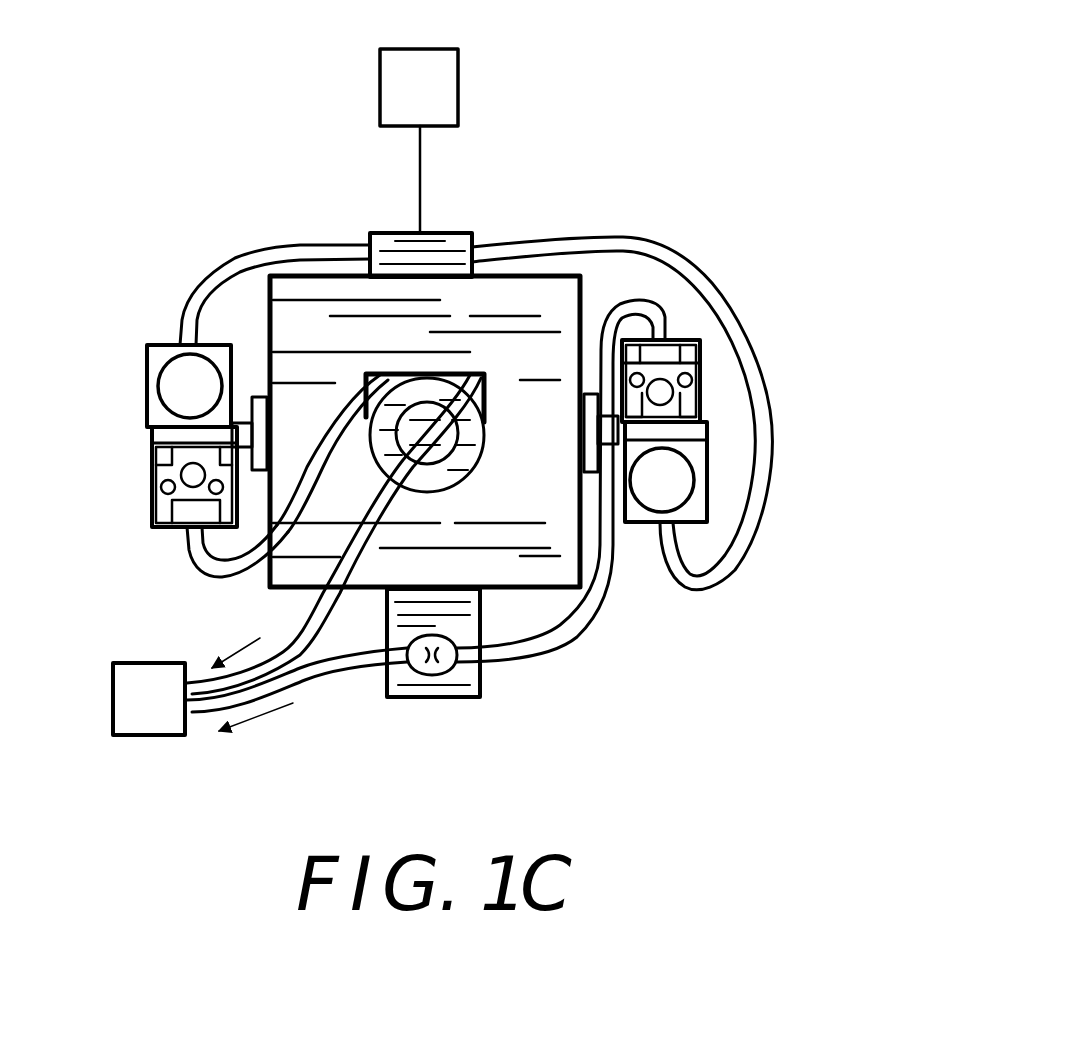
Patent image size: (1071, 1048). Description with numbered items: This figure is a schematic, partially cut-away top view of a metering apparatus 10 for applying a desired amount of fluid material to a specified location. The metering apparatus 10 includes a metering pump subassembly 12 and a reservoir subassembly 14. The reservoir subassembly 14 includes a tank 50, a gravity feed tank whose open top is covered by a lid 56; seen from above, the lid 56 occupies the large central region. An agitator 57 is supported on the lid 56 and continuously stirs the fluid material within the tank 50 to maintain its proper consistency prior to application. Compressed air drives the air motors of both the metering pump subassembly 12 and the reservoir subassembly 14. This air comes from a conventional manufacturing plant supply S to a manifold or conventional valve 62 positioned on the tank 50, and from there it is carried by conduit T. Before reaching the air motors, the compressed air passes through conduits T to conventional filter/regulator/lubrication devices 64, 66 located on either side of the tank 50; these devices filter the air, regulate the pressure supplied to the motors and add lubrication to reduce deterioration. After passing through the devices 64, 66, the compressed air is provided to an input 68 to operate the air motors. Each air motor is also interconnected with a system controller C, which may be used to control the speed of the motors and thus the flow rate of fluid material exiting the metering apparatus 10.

The metering apparatus 10 is at (632, 106).
The metering pump subassembly 12 is at (516, 677).
The reservoir subassembly 14 is at (636, 200).
The tank 50 is at (497, 297).
The lid 56 is at (532, 345).
The agitator 57 is at (357, 484).
The valve 62 is at (383, 232).
The filter/regulator/lubrication device 64 is at (717, 403).
The filter/regulator/lubrication device 66 is at (141, 397).
The input 68 is at (433, 670).
The conduit T is at (212, 277).
The manufacturing plant supply S is at (419, 141).
The system controller C is at (203, 686).